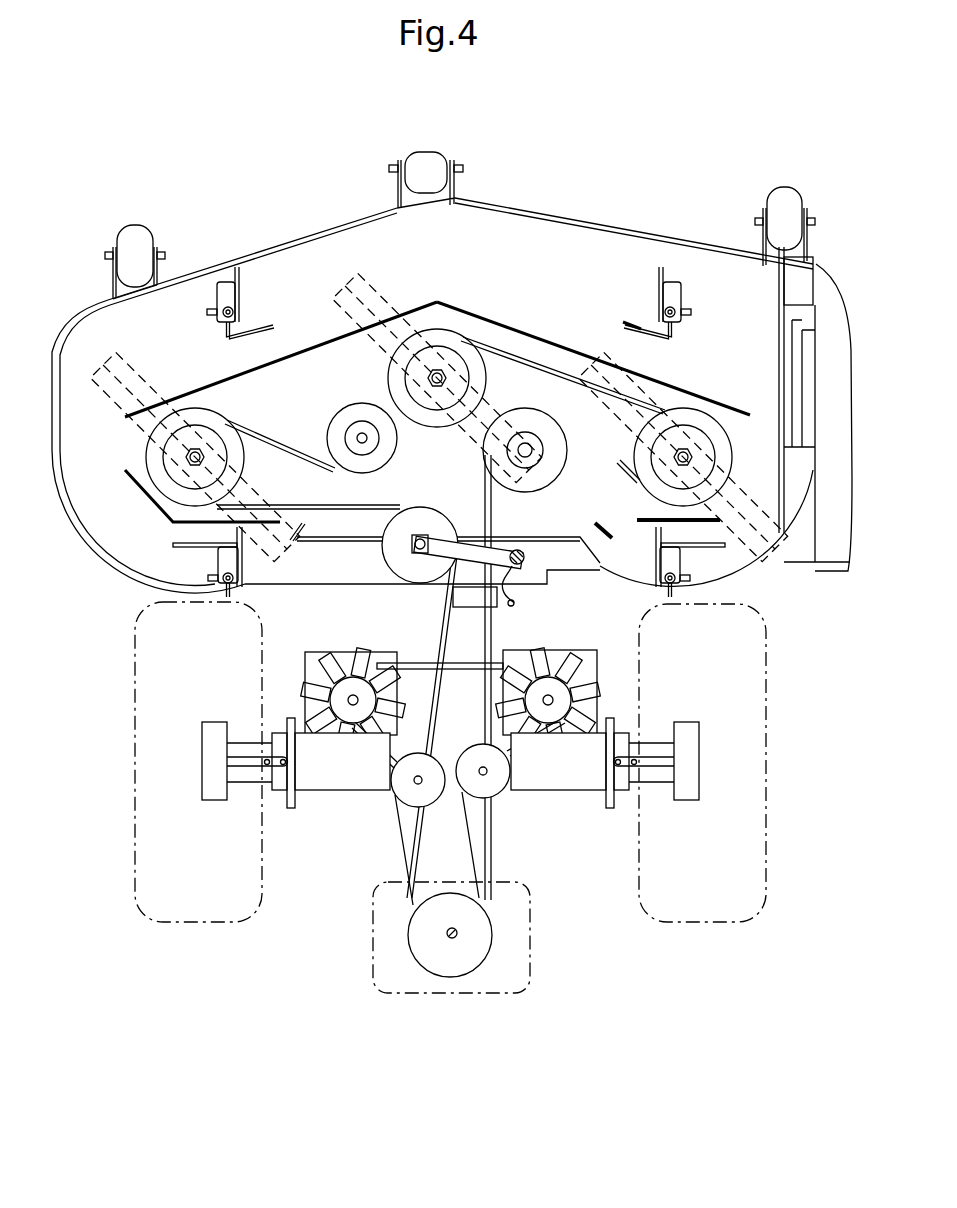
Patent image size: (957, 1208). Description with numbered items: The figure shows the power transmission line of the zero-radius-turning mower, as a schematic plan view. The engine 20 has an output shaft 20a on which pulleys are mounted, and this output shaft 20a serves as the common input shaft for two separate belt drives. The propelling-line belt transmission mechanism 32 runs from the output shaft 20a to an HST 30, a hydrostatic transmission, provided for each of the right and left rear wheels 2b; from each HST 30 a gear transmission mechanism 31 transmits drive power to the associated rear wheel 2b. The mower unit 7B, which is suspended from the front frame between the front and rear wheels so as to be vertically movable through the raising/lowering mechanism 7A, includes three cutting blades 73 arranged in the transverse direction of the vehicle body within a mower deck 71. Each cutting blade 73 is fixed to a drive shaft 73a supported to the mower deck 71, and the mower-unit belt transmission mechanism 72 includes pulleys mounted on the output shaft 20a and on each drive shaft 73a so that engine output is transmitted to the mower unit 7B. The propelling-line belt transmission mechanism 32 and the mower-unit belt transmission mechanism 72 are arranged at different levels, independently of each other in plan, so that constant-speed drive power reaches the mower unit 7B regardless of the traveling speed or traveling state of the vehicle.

The raising/lowering mechanism 7A is at (279, 232).
The mower unit 7B is at (690, 282).
The mower deck 71 is at (597, 242).
The mower-unit belt transmission mechanism 72 is at (287, 440).
The cutting blade 73 is at (131, 362).
The drive shaft 73a is at (188, 456).
The HST (hydrostatic transmission) 30 is at (345, 652).
The gear transmission mechanism 31 is at (323, 786).
The propelling-line belt transmission mechanism 32 is at (424, 658).
The rear wheel 2b is at (136, 773).
The engine 20 is at (468, 993).
The output shaft 20a is at (447, 937).